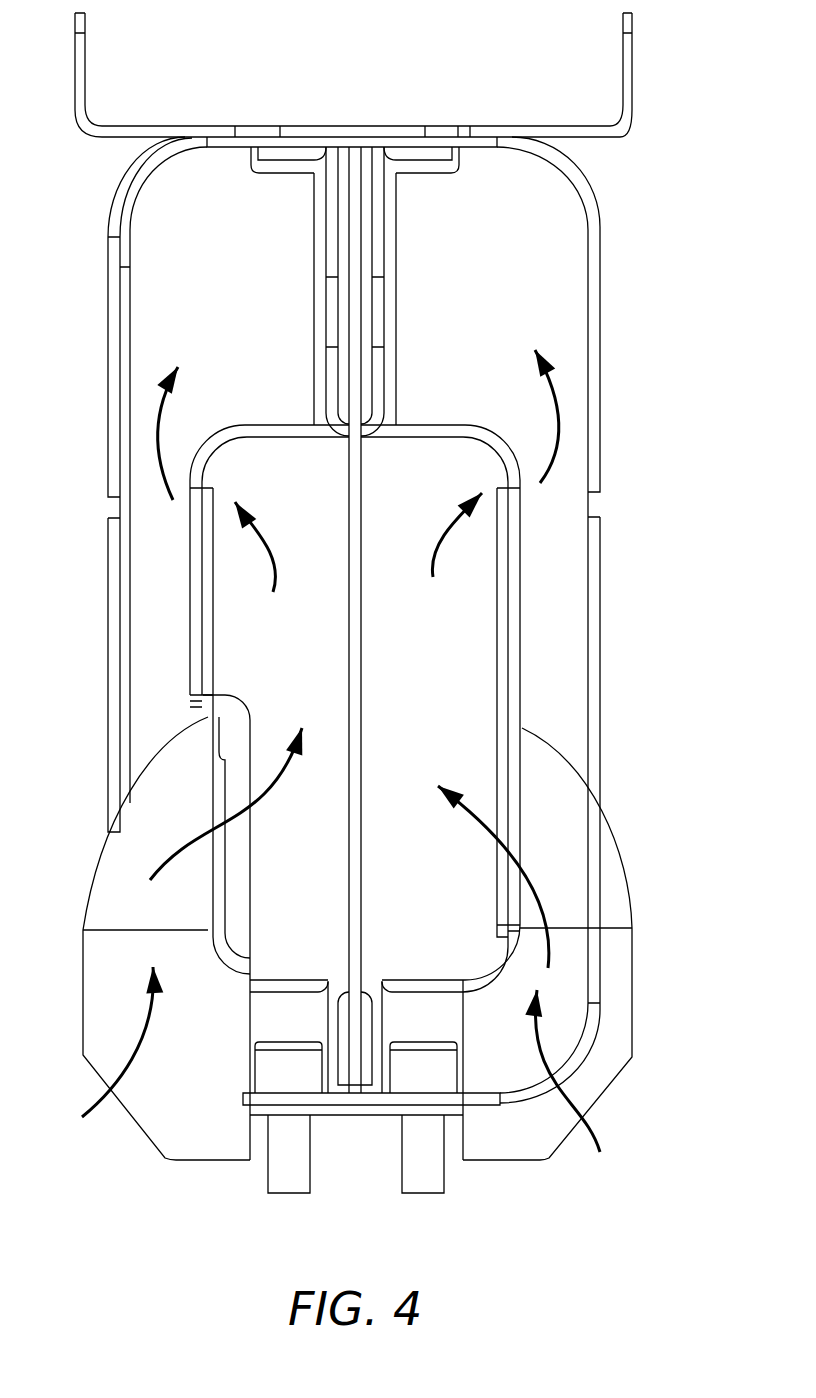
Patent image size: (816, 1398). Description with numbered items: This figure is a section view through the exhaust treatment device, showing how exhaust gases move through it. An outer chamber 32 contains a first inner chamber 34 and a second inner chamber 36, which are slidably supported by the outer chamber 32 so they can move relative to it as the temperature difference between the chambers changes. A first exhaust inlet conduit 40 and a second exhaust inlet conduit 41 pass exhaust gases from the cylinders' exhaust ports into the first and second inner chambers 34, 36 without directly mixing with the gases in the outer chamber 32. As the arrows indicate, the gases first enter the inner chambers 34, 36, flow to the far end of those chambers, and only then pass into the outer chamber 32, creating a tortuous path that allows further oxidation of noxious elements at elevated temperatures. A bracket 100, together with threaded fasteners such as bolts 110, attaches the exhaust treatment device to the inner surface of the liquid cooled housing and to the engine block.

The bracket 100 is at (528, 126).
The outer chamber 32 is at (227, 277).
The first inner chamber 34 is at (438, 667).
The second inner chamber 36 is at (298, 667).
The first exhaust inlet conduit 40 is at (630, 893).
The second exhaust inlet conduit 41 is at (88, 875).
The bolts 110 is at (430, 1195).